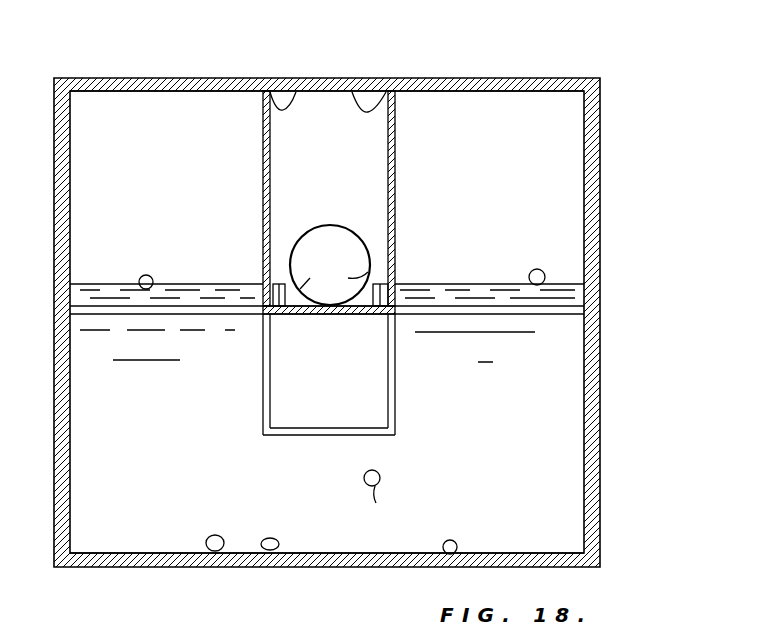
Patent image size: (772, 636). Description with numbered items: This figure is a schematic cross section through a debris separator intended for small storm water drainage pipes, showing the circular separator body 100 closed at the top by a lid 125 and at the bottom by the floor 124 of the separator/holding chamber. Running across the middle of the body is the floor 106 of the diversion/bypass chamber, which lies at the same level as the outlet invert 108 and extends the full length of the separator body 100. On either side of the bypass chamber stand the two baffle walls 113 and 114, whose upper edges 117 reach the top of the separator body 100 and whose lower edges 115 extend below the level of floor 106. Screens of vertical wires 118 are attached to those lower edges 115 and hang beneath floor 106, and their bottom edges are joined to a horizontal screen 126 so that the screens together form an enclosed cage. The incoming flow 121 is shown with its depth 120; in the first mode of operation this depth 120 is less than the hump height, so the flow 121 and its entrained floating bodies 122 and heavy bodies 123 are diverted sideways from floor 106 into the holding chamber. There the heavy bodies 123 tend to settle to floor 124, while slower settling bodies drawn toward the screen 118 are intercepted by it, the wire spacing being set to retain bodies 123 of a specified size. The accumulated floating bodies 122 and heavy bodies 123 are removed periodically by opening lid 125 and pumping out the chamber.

The separator body 100 is at (608, 195).
The floor 106 is at (305, 316).
The invert 108 is at (320, 238).
The baffle wall 113 is at (395, 148).
The baffle wall 114 is at (262, 133).
The lower edges 115 is at (262, 338).
The upper edges 117 is at (350, 92).
The screen of vertical wires 118 is at (340, 422).
The depth 120 is at (98, 282).
The flow 121 is at (350, 228).
The floating bodies 122 is at (150, 276).
The heavy bodies 123 is at (443, 544).
The floor 124 is at (157, 567).
The lid 125 is at (552, 80).
The horizontal screen 126 is at (286, 437).